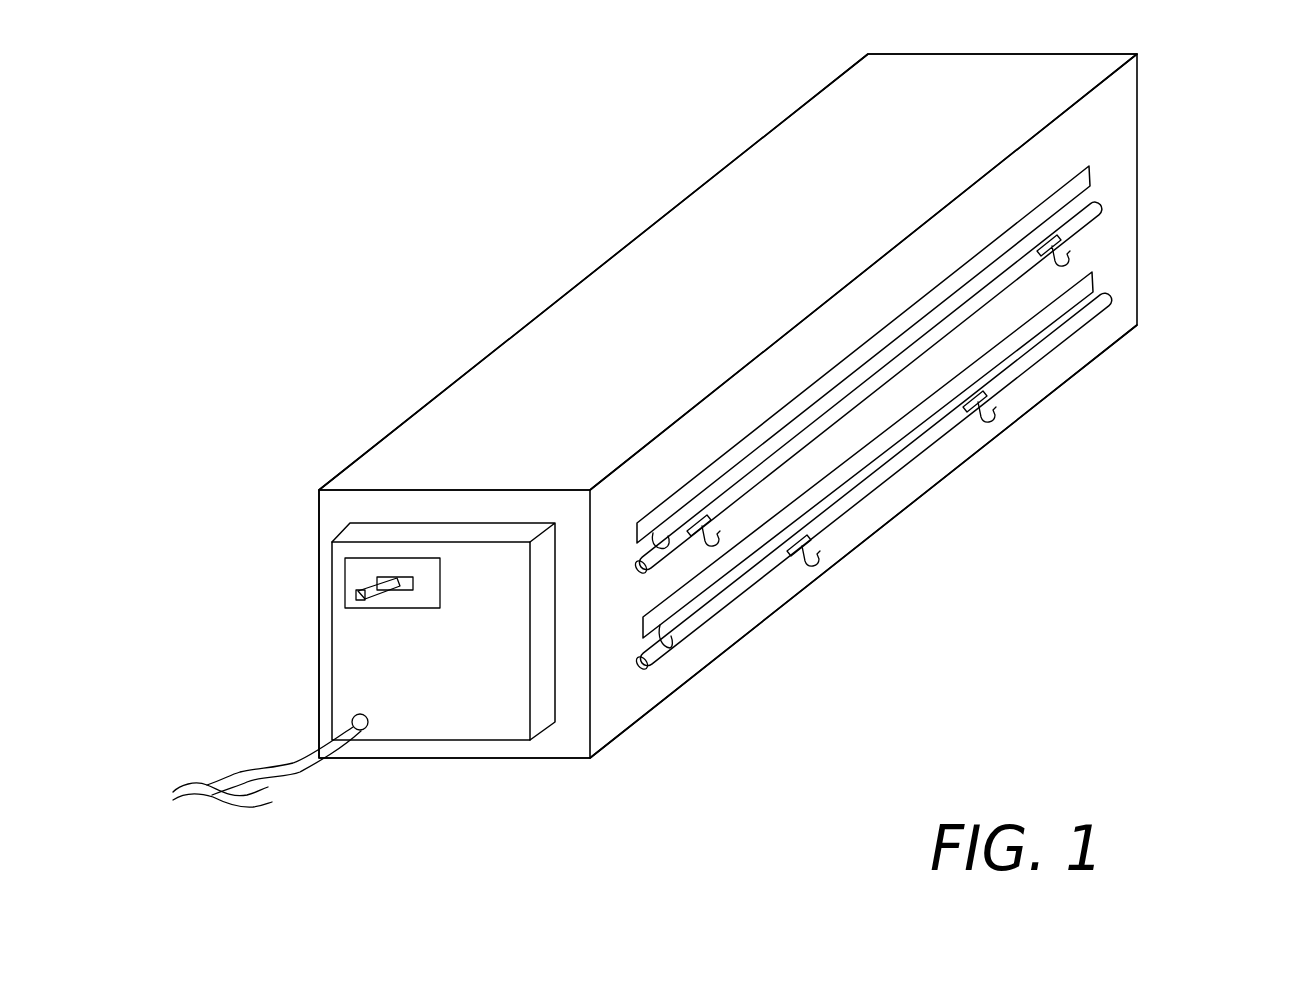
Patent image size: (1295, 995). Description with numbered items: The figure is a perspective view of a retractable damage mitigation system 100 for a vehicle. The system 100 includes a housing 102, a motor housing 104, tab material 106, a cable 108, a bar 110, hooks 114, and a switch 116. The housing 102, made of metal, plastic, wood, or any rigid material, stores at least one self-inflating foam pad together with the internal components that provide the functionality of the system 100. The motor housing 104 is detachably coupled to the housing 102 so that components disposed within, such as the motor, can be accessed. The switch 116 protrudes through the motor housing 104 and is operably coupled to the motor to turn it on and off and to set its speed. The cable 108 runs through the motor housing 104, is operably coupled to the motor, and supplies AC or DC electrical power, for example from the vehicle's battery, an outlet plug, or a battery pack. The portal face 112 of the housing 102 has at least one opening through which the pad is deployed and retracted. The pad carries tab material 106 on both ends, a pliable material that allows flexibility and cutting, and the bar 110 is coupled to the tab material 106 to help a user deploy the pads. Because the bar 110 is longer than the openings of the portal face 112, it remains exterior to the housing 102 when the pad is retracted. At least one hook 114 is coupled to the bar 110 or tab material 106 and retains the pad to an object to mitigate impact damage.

The retractable damage mitigation system 100 is at (473, 173).
The housing 102 is at (377, 441).
The motor housing 104 is at (352, 685).
The tab material 106 is at (1087, 206).
The cable 108 is at (293, 770).
The bar 110 is at (638, 566).
The portal face 112 is at (1084, 118).
The hook 114 is at (1067, 267).
The switch 116 is at (363, 590).